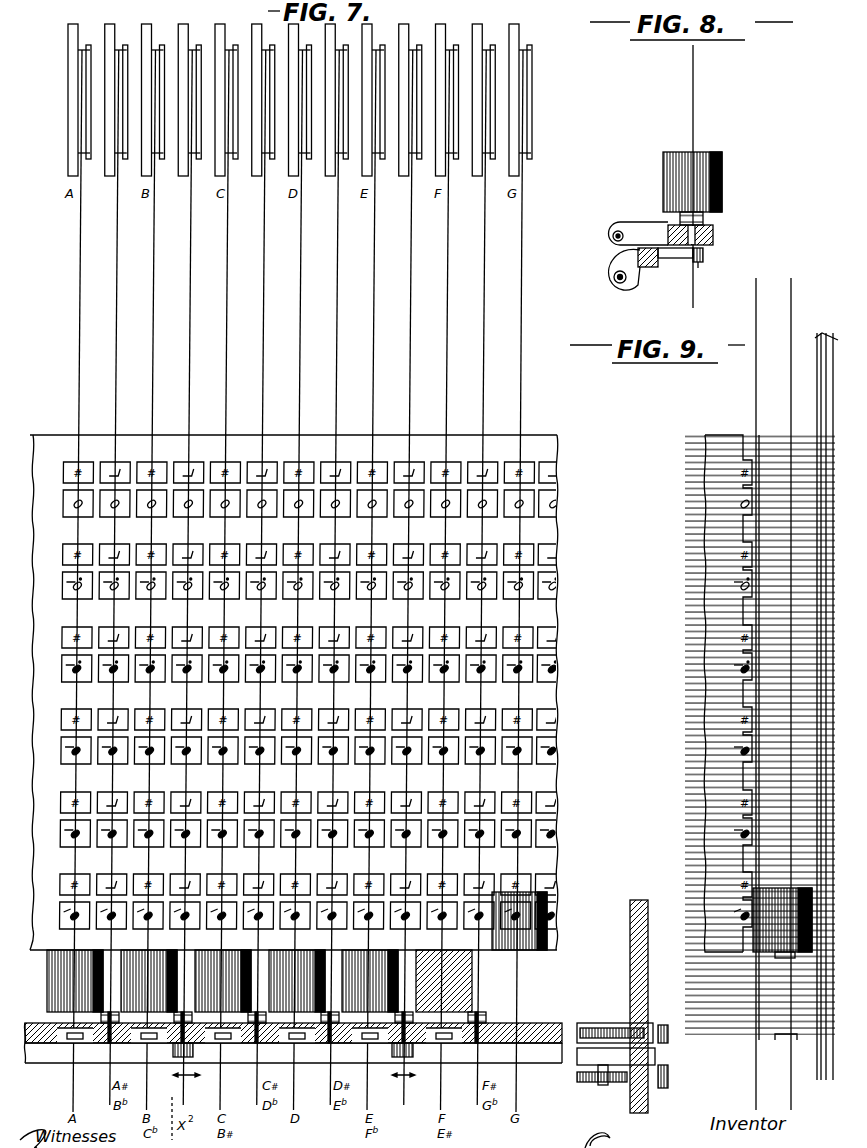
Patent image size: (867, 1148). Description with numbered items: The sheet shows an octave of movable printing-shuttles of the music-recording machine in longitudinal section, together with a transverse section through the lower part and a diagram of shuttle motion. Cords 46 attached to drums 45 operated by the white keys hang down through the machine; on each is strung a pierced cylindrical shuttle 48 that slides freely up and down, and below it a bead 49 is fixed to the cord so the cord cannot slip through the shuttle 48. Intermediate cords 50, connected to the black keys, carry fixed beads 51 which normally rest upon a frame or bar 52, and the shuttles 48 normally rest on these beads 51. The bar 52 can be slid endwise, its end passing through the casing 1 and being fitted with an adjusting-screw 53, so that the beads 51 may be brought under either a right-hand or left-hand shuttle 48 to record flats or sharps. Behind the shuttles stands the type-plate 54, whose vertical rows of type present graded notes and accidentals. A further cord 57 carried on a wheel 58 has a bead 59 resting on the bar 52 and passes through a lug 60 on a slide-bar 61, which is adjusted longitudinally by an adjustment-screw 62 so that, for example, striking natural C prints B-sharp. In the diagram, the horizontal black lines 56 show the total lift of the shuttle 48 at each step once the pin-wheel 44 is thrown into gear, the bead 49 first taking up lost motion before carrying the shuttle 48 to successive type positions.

In FIG. 9, the casing 1 is at (640, 953).
In FIG. 9, the pin-wheel 44 is at (799, 694).
In FIG. 7, the drum 45 is at (306, 152).
In FIG. 7, the cord 46 is at (80, 321).
In FIG. 7, the shuttle 48 is at (67, 966).
In FIG. 8, the shuttle 48 is at (706, 187).
In FIG. 9, the shuttle 48 is at (798, 896).
In FIG. 7, the bead 49 is at (72, 1040).
In FIG. 9, the bead 49 is at (784, 1040).
In FIG. 7, the intermediate cord 50 is at (113, 412).
In FIG. 7, the bead 51 is at (102, 1043).
In FIG. 7, the frame or bar 52 is at (36, 1023).
In FIG. 8, the frame or bar 52 is at (713, 238).
In FIG. 9, the frame or bar 52 is at (580, 1023).
In FIG. 8, the adjusting-screw 53 is at (612, 241).
In FIG. 9, the adjusting-screw 53 is at (668, 1038).
In FIG. 7, the type-plate 54 is at (547, 780).
In FIG. 9, the type-plate 54 is at (740, 716).
In FIG. 9, the horizontal black lines 56 is at (705, 522).
In FIG. 7, the cord 57 is at (188, 373).
In FIG. 7, the wheel 58 is at (193, 50).
In FIG. 7, the bead 59 is at (199, 1044).
In FIG. 8, the bead 59 is at (705, 219).
In FIG. 7, the lug 60 is at (179, 1057).
In FIG. 8, the lug 60 is at (701, 259).
In FIG. 7, the slide-bar 61 is at (32, 1052).
In FIG. 8, the slide-bar 61 is at (646, 268).
In FIG. 8, the adjustment-screw 62 is at (612, 283).
In FIG. 9, the adjustment-screw 62 is at (668, 1078).